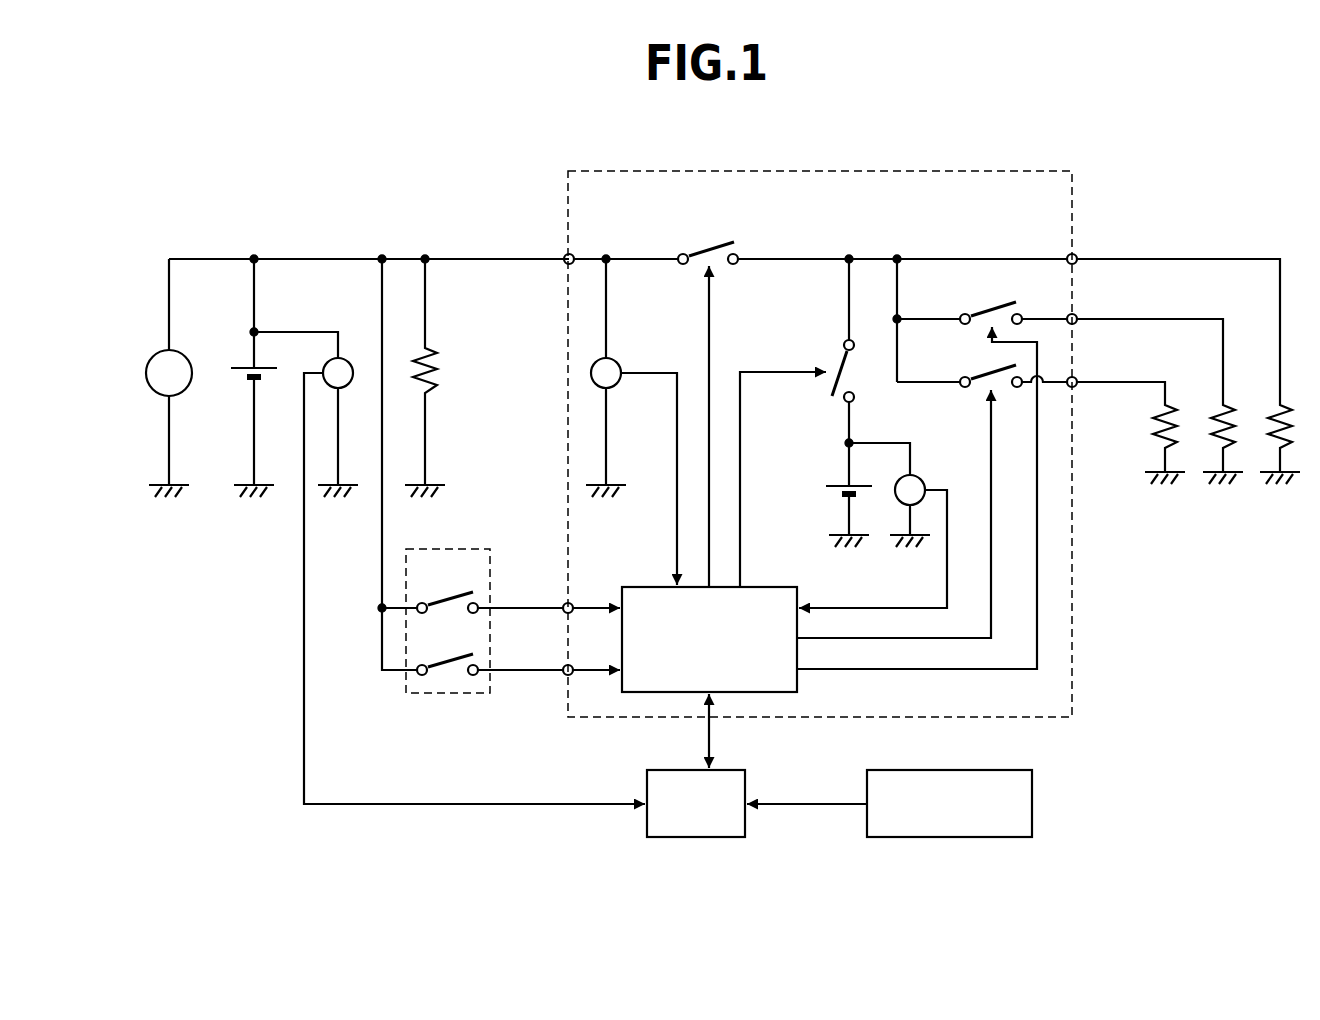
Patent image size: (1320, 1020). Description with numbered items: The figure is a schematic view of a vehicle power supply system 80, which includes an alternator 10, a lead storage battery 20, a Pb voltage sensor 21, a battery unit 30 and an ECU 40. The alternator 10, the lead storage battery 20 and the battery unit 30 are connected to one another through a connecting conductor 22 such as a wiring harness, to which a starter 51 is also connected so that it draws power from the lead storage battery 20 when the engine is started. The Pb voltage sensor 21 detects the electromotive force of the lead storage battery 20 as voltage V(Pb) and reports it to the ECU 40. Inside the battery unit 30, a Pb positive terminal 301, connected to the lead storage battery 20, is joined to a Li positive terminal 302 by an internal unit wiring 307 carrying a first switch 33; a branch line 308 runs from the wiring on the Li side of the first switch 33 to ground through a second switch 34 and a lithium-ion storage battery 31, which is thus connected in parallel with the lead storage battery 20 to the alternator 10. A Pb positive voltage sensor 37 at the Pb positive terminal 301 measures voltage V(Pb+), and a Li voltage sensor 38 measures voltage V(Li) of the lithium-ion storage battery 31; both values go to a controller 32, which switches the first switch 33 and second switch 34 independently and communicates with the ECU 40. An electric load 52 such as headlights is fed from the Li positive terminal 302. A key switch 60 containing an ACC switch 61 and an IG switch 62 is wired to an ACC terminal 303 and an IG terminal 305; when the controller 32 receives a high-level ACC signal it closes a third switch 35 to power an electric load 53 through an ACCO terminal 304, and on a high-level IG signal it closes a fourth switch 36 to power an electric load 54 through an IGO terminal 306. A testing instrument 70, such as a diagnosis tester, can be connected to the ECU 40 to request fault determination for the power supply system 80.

The alternator 10 is at (150, 360).
The lead storage battery 20 is at (250, 366).
The Pb voltage sensor 21 is at (352, 363).
The connecting conductor 22 is at (460, 258).
The battery unit 30 is at (1012, 171).
The lithium-ion storage battery 31 is at (835, 485).
The controller 32 is at (755, 587).
The first switch 33 is at (708, 248).
The second switch 34 is at (836, 360).
The third switch 35 is at (988, 306).
The fourth switch 36 is at (988, 370).
The Pb positive (+) voltage sensor 37 is at (618, 384).
The Li voltage sensor 38 is at (896, 488).
The ECU 40 is at (730, 770).
The starter 51 is at (436, 368).
The electric load 52 is at (1290, 420).
The electric load 53 is at (1232, 420).
The electric load 54 is at (1178, 420).
The key switch 60 is at (468, 549).
The ACC switch 61 is at (452, 600).
The IG switch 62 is at (452, 662).
The testing instrument 70 is at (945, 770).
The power supply system 80 is at (268, 738).
The Pb positive (+) terminal 301 is at (563, 263).
The Li positive (+) terminal 302 is at (1080, 263).
The ACC terminal 303 is at (563, 614).
The ACCO terminal 304 is at (1080, 323).
The IG terminal 305 is at (563, 676).
The IGO terminal 306 is at (1080, 387).
The internal unit wiring 307 is at (815, 258).
The branch line 308 is at (848, 288).